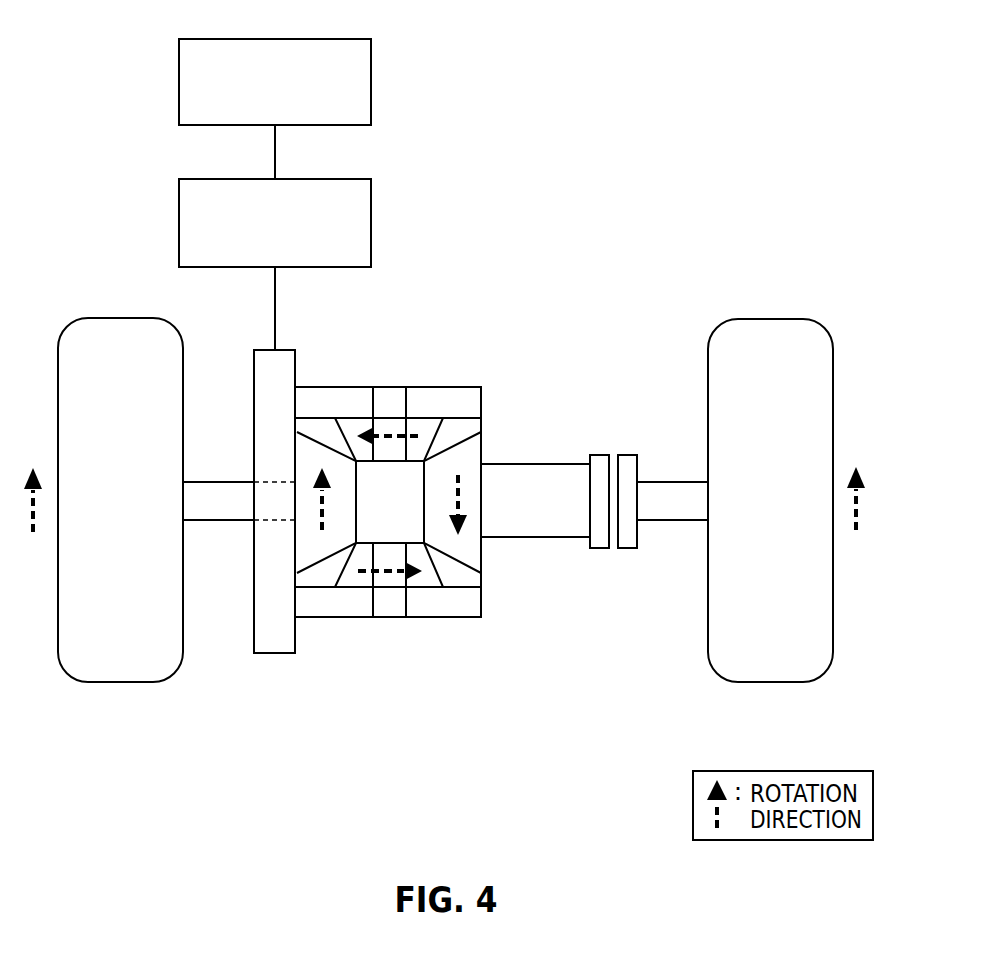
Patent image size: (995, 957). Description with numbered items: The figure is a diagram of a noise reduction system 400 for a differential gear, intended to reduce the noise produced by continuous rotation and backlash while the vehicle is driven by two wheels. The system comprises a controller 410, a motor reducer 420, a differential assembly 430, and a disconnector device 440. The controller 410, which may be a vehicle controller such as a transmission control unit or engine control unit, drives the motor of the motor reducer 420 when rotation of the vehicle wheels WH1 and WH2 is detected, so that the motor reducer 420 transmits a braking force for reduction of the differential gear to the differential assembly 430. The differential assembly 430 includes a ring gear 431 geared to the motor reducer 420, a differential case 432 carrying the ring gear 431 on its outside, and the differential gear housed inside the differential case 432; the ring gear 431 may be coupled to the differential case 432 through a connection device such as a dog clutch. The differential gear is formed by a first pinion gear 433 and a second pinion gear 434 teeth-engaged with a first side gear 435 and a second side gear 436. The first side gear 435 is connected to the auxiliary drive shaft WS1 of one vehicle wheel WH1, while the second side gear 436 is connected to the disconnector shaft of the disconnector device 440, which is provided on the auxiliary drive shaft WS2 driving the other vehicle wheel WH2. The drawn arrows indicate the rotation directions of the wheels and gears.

The noise reduction system 400 is at (703, 54).
The controller 410 is at (275, 82).
The motor reducer 420 is at (275, 237).
The differential assembly 430 is at (358, 551).
The ring gear 431 is at (262, 635).
The differential case 432 is at (315, 607).
The first pinion gear 433 is at (428, 427).
The second pinion gear 434 is at (425, 582).
The first side gear 435 is at (330, 535).
The second side gear 436 is at (473, 593).
The disconnector device 440 is at (535, 475).
The vehicle wheel WH1 is at (123, 318).
The vehicle wheel WH2 is at (768, 318).
The auxiliary drive shaft WS1 is at (207, 493).
The auxiliary drive shaft WS2 is at (660, 492).